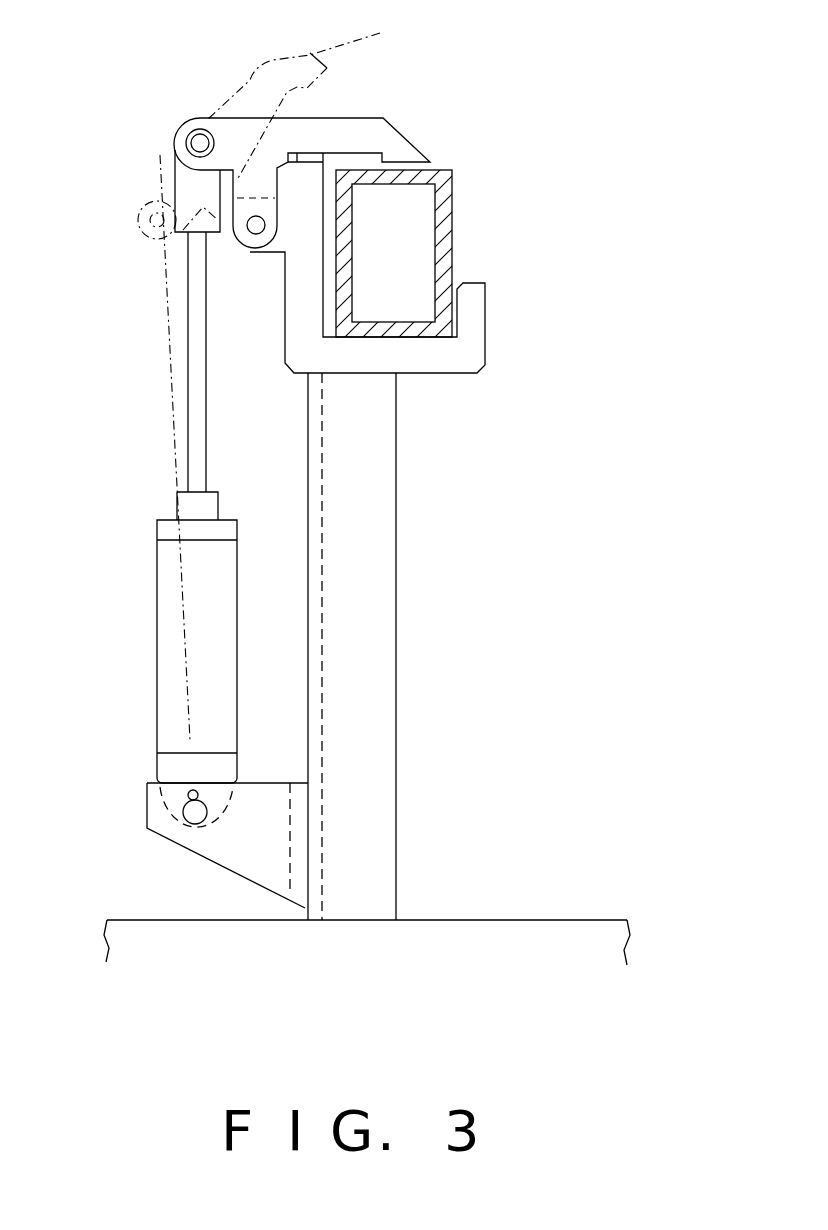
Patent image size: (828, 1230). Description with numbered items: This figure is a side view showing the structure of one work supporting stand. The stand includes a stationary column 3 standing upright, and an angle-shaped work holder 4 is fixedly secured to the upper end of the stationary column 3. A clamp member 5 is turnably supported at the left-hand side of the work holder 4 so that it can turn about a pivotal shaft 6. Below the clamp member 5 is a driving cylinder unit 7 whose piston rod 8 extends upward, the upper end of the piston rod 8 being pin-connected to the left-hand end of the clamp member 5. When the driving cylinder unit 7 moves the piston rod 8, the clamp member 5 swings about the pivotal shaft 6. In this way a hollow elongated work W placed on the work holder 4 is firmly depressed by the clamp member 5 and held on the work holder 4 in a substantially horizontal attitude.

The stationary column 3 is at (378, 628).
The work holder 4 is at (483, 320).
The clamp member 5 is at (367, 122).
The pivotal shaft 6 is at (258, 229).
The driving cylinder unit 7 is at (170, 615).
The piston rod 8 is at (200, 348).
The work W is at (453, 210).